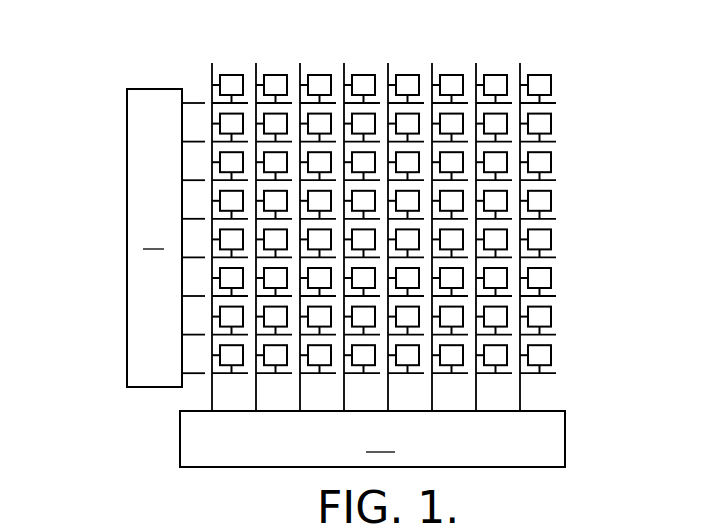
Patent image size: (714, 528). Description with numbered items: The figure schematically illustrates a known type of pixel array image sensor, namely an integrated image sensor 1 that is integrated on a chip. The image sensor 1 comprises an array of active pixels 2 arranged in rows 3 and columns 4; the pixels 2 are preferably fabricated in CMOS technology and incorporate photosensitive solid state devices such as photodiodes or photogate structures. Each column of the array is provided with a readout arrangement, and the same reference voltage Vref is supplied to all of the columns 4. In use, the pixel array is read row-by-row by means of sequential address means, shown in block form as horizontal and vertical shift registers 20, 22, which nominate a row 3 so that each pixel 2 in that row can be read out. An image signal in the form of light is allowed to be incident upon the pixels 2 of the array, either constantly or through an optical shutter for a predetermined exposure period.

The integrated image sensor 1 is at (327, 233).
The active pixels 2 is at (538, 348).
The rows 3 is at (559, 193).
The columns 4 is at (373, 62).
The horizontal shift register 20 is at (166, 238).
The vertical shift register 22 is at (372, 439).